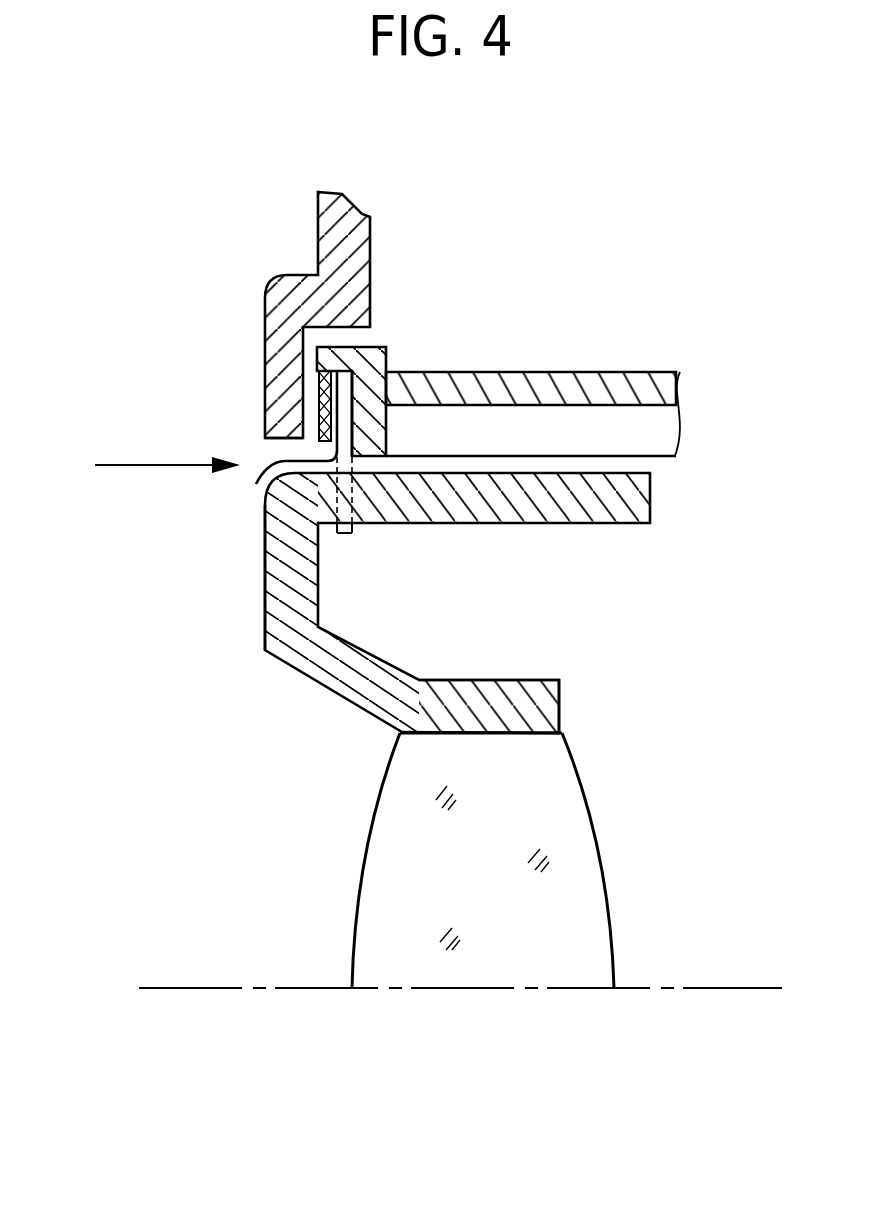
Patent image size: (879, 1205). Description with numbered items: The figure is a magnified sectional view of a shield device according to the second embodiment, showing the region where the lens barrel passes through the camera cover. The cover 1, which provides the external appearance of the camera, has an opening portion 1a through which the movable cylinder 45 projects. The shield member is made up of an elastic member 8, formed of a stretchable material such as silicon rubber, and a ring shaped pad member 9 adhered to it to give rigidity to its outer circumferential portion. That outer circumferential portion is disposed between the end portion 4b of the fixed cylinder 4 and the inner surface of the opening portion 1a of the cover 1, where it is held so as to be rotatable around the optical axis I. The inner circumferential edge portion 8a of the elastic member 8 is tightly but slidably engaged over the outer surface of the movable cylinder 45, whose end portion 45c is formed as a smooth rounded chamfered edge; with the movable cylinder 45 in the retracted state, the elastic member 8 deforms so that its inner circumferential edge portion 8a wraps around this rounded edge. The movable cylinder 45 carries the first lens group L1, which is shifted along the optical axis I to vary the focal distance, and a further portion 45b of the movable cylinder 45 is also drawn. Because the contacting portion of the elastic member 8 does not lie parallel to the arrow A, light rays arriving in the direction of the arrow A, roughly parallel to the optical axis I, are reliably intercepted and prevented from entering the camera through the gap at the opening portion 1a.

The cover 1 is at (333, 230).
The opening portion of the cover 1a is at (275, 445).
The fixed cylinder 4 is at (596, 386).
The end portion of the fixed cylinder 4b is at (370, 352).
The elastic member 8 is at (322, 408).
The inner circumferential edge portion 8a is at (267, 475).
The ring shaped pad member 9 is at (326, 371).
The movable cylinder 45 is at (332, 660).
The lens holding portion 45b is at (507, 690).
The end portion of the movable cylinder 45c is at (286, 494).
The arrow A is at (143, 462).
The first lens group L1 is at (395, 896).
The optical axis I is at (303, 988).